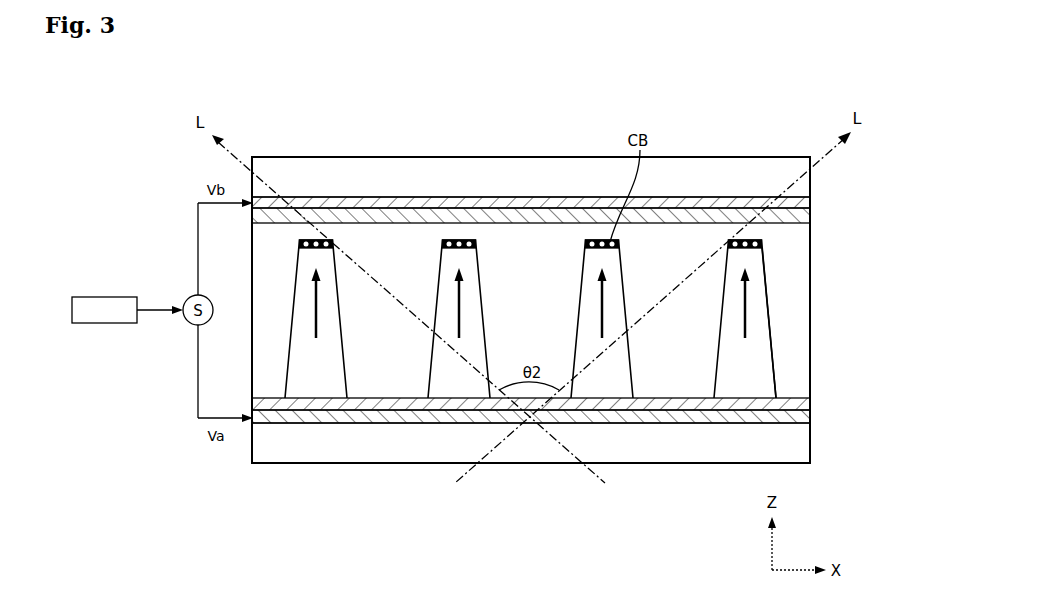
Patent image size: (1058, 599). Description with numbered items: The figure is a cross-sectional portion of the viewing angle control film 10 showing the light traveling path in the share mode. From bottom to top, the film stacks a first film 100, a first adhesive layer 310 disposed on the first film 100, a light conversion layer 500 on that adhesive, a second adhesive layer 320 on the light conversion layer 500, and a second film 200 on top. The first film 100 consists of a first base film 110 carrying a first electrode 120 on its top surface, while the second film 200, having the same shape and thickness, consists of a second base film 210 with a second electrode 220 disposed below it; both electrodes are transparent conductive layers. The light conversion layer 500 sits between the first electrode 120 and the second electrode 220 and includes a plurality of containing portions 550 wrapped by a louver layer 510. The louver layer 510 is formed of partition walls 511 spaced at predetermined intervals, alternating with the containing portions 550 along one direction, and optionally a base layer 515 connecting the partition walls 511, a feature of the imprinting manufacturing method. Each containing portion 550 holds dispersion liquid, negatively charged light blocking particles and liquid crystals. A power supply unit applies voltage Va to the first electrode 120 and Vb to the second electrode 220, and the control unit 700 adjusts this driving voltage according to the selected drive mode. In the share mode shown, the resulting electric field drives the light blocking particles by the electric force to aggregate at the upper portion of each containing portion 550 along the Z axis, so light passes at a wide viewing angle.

The viewing angle control film 10 is at (192, 104).
The first film 100 is at (588, 436).
The first base film 110 is at (812, 443).
The first electrode 120 is at (812, 417).
The second film 200 is at (588, 184).
The second base film 210 is at (812, 187).
The second electrode 220 is at (812, 205).
The first adhesive layer 310 is at (812, 405).
The second adhesive layer 320 is at (812, 218).
The light conversion layer 500 is at (627, 316).
The louver layer 510 is at (826, 316).
The partition wall 511 is at (782, 293).
The base layer 515 is at (768, 240).
The containing portion 550 is at (762, 338).
The control unit 700 is at (104, 310).